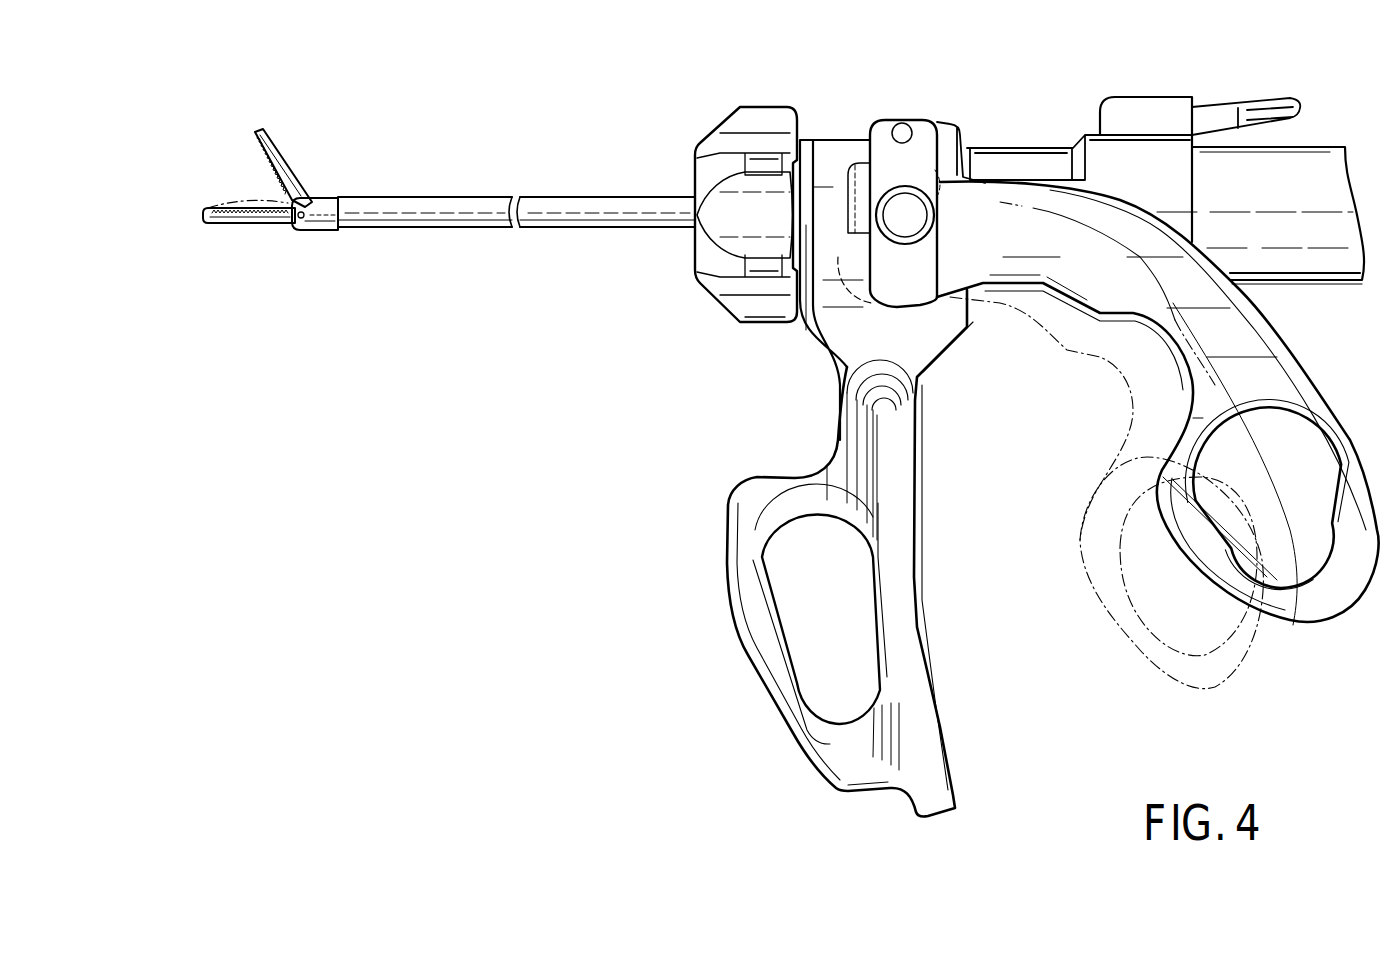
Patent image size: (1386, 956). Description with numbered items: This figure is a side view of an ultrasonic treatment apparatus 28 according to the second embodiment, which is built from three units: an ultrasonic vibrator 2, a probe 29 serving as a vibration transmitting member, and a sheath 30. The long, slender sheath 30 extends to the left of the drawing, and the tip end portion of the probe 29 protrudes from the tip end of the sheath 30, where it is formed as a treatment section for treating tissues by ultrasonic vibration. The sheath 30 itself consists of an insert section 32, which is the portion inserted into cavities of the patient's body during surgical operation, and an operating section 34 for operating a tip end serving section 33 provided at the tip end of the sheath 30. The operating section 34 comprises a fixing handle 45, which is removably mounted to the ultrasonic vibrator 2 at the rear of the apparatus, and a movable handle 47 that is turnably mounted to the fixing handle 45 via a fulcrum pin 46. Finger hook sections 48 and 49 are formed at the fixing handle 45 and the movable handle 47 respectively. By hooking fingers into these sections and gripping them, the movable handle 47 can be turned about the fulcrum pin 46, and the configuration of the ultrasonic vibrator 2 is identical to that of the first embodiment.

The ultrasonic vibrator 2 is at (1318, 172).
The ultrasonic treatment apparatus 28 is at (791, 435).
The probe 29 is at (246, 228).
The sheath 30 is at (567, 237).
The insert section 32 is at (561, 188).
The tip end serving section 33 is at (286, 140).
The operating section 34 is at (997, 435).
The fixing handle 45 is at (900, 647).
The fulcrum pin 46 is at (900, 130).
The movable handle 47 is at (1158, 435).
The finger hook section 48 is at (778, 623).
The finger hook section 49 is at (1307, 567).